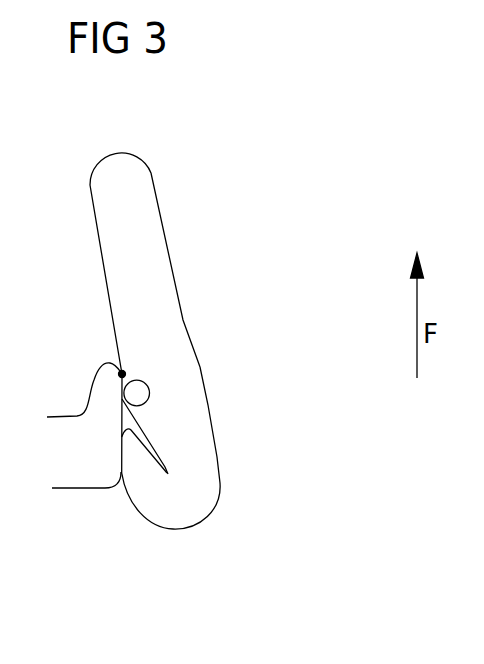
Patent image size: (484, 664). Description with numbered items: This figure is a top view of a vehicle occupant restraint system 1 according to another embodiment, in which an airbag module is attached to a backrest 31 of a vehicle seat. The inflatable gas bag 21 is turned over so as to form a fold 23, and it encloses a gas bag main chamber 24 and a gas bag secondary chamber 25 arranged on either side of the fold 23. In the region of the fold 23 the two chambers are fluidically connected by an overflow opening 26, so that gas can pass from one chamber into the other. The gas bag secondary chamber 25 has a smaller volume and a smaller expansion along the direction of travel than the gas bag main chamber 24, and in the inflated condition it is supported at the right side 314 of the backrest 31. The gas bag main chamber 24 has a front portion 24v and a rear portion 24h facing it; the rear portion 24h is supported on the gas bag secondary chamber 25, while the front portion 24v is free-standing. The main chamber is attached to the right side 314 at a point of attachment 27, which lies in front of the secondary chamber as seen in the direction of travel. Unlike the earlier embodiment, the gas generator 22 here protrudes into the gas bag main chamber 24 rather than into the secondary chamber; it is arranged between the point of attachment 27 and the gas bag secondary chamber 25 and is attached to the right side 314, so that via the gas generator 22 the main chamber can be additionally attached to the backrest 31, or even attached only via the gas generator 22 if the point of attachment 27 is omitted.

The vehicle occupant restraint system 1 is at (258, 187).
The inflatable gas bag 21 is at (208, 405).
The gas generator 22 is at (140, 392).
The fold 23 is at (165, 465).
The gas bag main chamber 24 is at (150, 298).
The front portion of the gas bag main chamber 24v is at (138, 192).
The rear portion of the gas bag main chamber 24h is at (200, 457).
The gas bag secondary chamber 25 is at (140, 495).
The overflow opening 26 is at (180, 517).
The point of attachment 27 is at (122, 374).
The backrest 31 is at (73, 437).
The right side of the backrest 314 is at (121, 453).